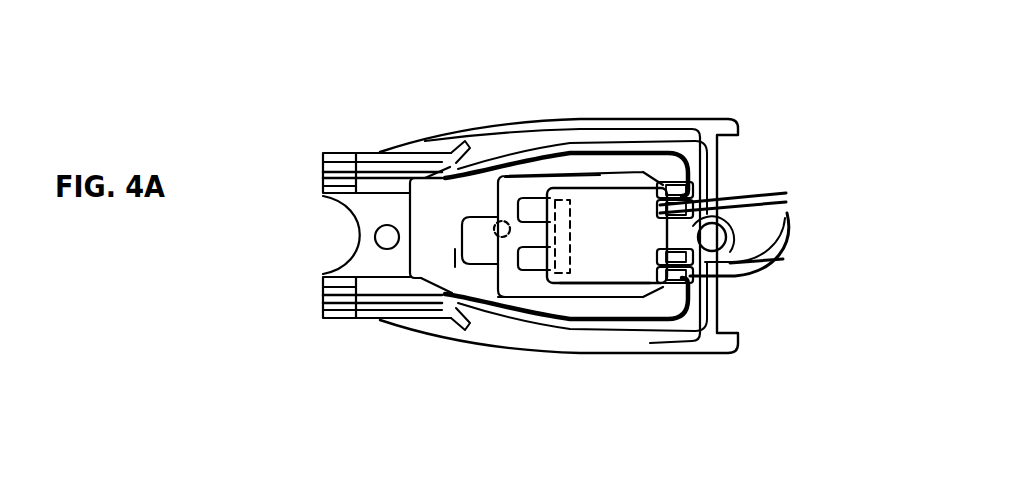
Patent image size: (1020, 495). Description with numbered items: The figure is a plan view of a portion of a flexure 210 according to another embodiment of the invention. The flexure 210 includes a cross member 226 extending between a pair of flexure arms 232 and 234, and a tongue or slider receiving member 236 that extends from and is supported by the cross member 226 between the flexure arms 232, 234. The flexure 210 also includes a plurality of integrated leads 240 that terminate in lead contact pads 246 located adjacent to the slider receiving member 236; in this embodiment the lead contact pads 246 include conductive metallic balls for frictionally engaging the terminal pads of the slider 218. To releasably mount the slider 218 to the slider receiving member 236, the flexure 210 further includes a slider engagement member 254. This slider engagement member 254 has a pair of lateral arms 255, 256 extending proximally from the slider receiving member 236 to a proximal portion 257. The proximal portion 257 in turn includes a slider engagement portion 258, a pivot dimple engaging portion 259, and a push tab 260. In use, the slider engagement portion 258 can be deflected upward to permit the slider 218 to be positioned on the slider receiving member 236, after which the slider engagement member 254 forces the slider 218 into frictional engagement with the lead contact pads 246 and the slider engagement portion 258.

The flexure 210 is at (311, 84).
The slider 218 is at (630, 245).
The cross member 226 is at (718, 163).
The flexure arm 232 is at (545, 352).
The flexure arm 234 is at (540, 120).
The slider receiving member 236 is at (612, 272).
The integrated leads 240 is at (706, 144).
The lead contact pads 246 is at (759, 232).
The slider engagement member 254 is at (492, 259).
The lateral arm 255 is at (517, 293).
The lateral arm 256 is at (537, 183).
The proximal portion 257 is at (478, 299).
The slider engagement portion 258 is at (541, 228).
The pivot dimple engaging portion 259 is at (495, 228).
The push tab 260 is at (455, 253).